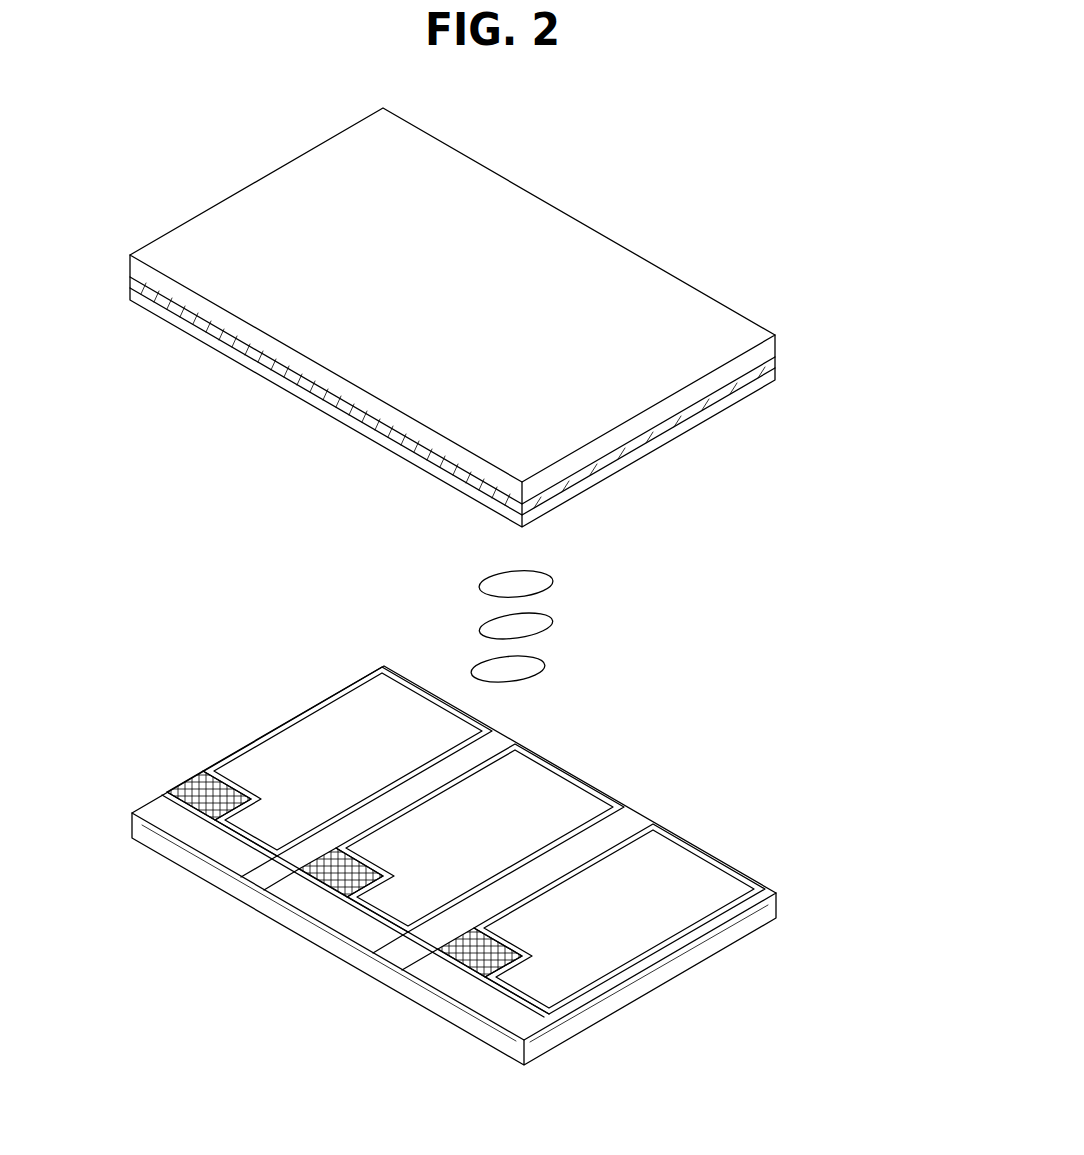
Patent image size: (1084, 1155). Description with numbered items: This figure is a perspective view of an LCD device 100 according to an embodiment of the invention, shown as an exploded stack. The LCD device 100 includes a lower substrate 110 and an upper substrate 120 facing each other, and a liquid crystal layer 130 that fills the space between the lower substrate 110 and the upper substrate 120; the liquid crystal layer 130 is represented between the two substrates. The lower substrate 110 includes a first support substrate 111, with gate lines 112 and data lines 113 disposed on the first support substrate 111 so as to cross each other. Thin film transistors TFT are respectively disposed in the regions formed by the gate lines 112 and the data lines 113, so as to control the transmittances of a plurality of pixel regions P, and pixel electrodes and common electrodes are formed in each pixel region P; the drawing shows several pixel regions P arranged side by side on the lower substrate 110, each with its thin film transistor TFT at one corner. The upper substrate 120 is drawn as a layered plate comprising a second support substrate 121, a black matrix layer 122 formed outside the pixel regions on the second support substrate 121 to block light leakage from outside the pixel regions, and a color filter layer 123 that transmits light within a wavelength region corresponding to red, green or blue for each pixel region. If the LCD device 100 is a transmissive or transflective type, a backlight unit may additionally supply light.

The LCD device 100 is at (825, 975).
The lower substrate 110 is at (447, 867).
The first support substrate 111 is at (617, 997).
The gate lines 112 is at (162, 810).
The data lines 113 is at (454, 837).
The upper substrate 120 is at (418, 306).
The second support substrate 121 is at (140, 273).
The black matrix layer 122 is at (137, 292).
The color filter layer 123 is at (142, 307).
The liquid crystal layer 130 is at (592, 621).
The pixel region P is at (288, 740).
The thin film transistor TFT is at (200, 785).